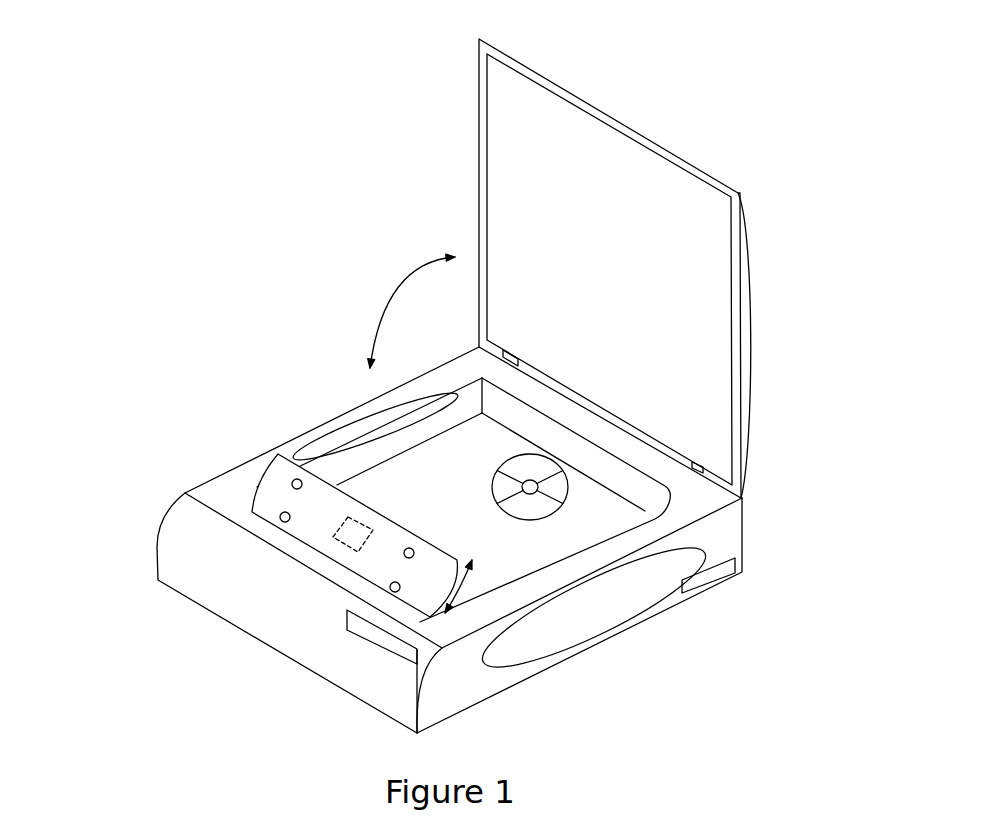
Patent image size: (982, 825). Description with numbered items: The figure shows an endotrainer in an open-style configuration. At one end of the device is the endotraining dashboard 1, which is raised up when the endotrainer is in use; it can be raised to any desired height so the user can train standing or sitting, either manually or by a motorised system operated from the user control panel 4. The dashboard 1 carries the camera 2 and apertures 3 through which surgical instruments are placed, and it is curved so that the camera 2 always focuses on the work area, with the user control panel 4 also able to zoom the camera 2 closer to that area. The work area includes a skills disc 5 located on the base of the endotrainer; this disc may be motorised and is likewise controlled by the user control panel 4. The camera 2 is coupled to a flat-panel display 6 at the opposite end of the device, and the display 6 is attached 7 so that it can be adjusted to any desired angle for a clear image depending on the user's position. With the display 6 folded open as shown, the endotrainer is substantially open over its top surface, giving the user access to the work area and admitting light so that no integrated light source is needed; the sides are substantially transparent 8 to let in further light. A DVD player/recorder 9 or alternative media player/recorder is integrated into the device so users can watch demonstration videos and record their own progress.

The endotraining dashboard 1 is at (272, 494).
The camera 2 is at (357, 542).
The apertures 3 is at (388, 587).
The user control panel 4 is at (347, 626).
The skills disc 5 is at (543, 510).
The display 6 is at (655, 277).
The display attachment 7 is at (700, 470).
The transparent sides 8 is at (608, 608).
The DVD player/recorder 9 is at (708, 580).